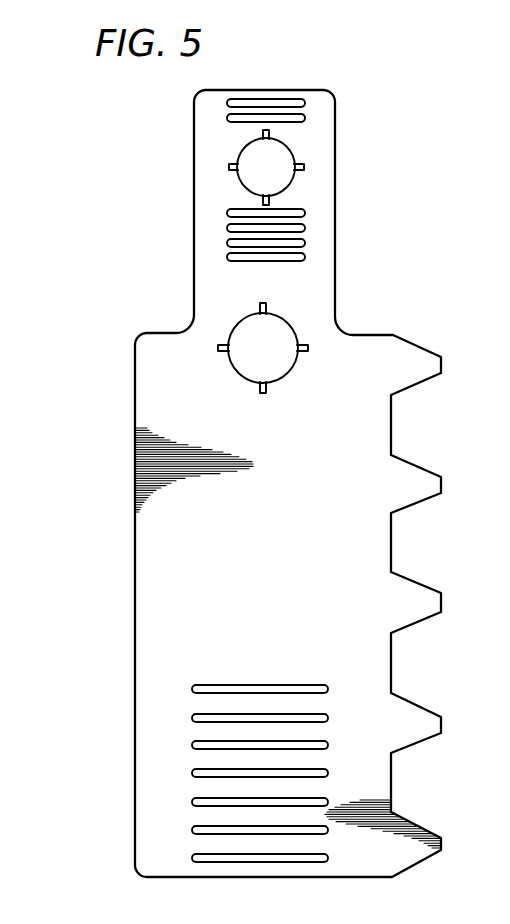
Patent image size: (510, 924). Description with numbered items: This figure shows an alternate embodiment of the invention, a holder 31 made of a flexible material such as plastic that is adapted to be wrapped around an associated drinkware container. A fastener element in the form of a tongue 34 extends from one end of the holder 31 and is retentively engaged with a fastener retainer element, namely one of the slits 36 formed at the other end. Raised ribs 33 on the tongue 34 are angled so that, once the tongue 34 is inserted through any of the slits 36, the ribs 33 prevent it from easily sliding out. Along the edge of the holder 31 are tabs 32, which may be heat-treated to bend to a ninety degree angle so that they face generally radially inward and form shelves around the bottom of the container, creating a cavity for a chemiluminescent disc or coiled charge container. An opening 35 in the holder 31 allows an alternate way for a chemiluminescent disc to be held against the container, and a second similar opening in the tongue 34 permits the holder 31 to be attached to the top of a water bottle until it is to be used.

The holder 31 is at (118, 460).
The tabs 32 is at (422, 468).
The raised ribs 33 is at (235, 212).
The tongue 34 is at (317, 192).
The opening 35 is at (257, 342).
The slits 36 is at (192, 745).